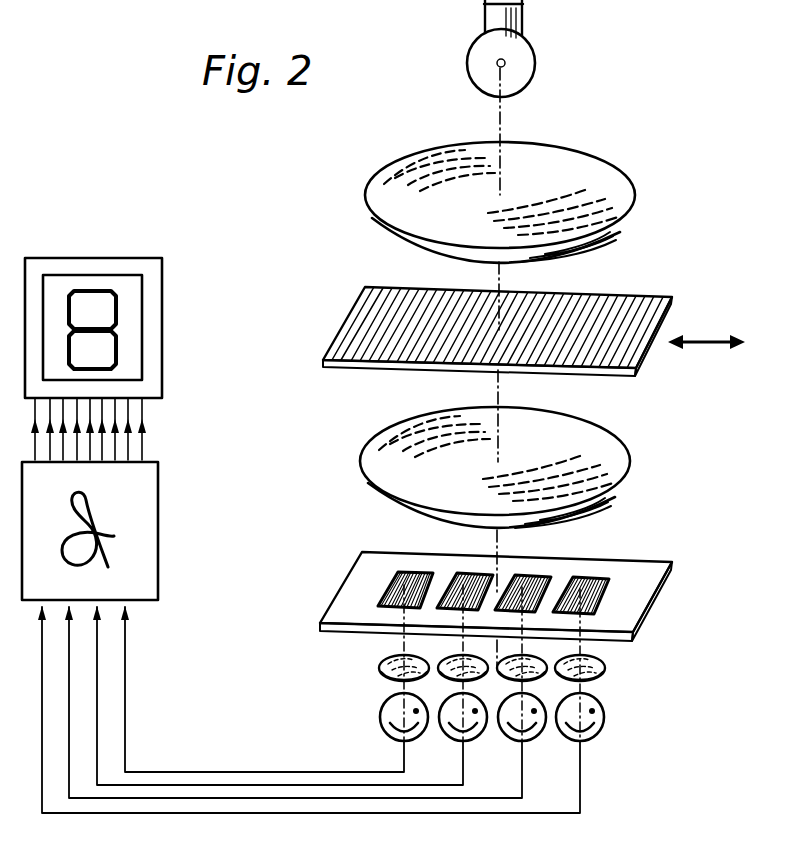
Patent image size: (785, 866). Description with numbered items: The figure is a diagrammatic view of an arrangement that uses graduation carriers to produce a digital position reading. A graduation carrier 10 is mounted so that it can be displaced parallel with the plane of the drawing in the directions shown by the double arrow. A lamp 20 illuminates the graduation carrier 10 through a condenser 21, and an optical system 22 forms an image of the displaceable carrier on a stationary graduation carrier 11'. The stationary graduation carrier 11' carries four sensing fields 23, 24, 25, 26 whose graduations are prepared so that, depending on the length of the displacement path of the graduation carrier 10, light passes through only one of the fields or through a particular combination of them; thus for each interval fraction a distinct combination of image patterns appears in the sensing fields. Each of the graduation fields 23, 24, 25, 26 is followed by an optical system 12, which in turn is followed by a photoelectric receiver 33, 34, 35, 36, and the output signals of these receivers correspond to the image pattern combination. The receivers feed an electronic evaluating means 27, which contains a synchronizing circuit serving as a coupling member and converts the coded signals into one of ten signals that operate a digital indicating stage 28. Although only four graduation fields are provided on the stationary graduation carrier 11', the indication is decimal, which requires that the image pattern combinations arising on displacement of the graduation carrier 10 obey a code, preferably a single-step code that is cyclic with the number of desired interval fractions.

The graduation carrier 10 is at (365, 318).
The stationary graduation carrier 11' is at (481, 610).
The optical system 12 is at (457, 658).
The lamp 20 is at (517, 63).
The condenser 21 is at (608, 197).
The optical system 22 is at (610, 467).
The sensing field 23 is at (392, 585).
The sensing field 24 is at (462, 585).
The sensing field 25 is at (535, 583).
The sensing field 26 is at (598, 583).
The electronic evaluating means 27 is at (143, 525).
The digital indicating stage 28 is at (148, 340).
The photoelectric receiver 33 is at (388, 713).
The photoelectric receiver 34 is at (449, 733).
The photoelectric receiver 35 is at (537, 735).
The photoelectric receiver 36 is at (601, 715).